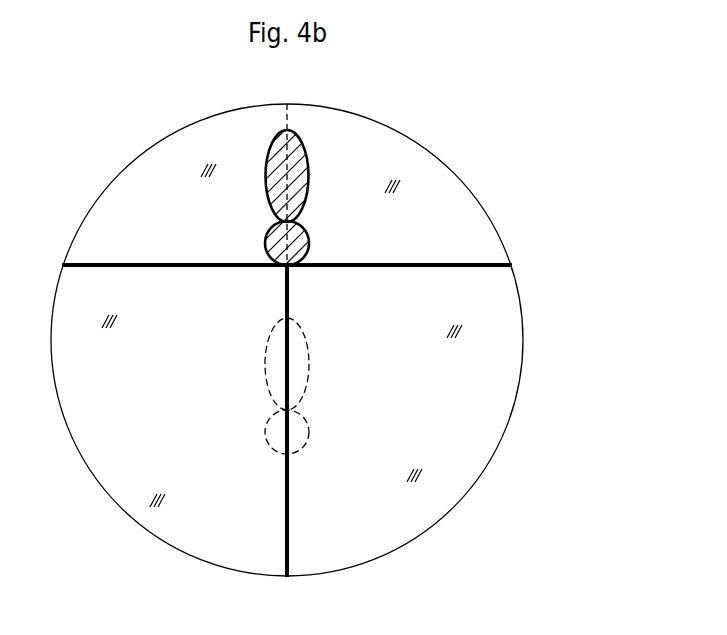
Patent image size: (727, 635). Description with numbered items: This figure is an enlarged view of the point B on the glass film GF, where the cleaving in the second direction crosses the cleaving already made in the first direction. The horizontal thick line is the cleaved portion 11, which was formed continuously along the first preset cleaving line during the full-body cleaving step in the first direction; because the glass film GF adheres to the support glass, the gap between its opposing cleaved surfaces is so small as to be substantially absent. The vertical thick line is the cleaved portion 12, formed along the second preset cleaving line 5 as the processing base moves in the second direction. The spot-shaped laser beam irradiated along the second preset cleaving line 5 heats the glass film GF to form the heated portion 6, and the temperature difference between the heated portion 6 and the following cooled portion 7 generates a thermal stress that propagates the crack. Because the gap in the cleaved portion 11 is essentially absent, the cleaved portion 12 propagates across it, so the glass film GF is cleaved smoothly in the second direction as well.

The second preset cleaving line 5 is at (288, 113).
The heated portion 6 is at (309, 167).
The cooled portion 7 is at (308, 240).
The cleaved portion 11 is at (455, 265).
The cleaved portion 12 is at (287, 540).
The point B is at (104, 158).
The glass film GF is at (480, 398).